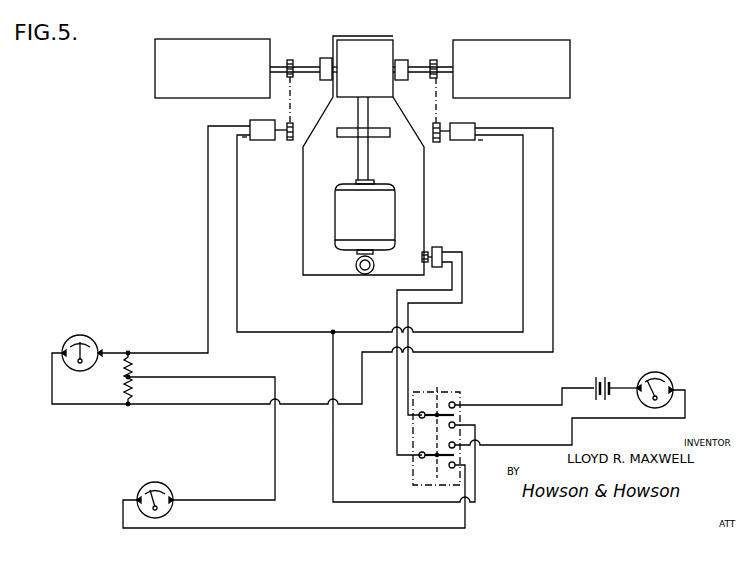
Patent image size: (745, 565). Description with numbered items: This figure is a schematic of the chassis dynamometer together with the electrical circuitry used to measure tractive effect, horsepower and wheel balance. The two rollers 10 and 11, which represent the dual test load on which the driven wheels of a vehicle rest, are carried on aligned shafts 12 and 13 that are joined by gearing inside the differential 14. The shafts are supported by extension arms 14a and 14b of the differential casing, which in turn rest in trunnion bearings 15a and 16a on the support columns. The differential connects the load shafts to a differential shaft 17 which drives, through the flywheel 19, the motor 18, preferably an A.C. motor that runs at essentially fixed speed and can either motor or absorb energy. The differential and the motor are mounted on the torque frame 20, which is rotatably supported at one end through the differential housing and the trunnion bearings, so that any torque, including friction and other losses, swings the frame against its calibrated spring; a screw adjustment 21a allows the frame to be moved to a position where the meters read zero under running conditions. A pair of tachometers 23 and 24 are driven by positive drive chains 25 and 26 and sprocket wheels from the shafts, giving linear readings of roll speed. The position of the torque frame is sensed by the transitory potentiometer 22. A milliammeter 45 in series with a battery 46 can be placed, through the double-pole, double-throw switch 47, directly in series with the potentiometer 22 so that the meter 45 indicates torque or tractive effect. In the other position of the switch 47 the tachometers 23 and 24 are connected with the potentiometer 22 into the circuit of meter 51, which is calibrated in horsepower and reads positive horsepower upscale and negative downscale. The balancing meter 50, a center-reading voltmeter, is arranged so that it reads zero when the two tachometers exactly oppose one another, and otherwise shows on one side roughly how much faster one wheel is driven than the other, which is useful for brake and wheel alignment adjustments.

The roller 10 is at (519, 78).
The roller 11 is at (219, 78).
The shaft 12 is at (417, 64).
The shaft 13 is at (303, 64).
The differential 14 is at (354, 46).
The extension arm of differential housing 14a is at (401, 58).
The extension arm of differential housing 14b is at (331, 56).
The trunnion bearing 15a is at (403, 79).
The trunnion bearing 16a is at (321, 78).
The differential shaft 17 is at (358, 116).
The motor 18 is at (372, 220).
The flywheel 19 is at (348, 138).
The torque frame 20 is at (303, 220).
The screw adjustment 21a is at (363, 275).
The transitory potentiometer 22 is at (437, 249).
The tachometer 23 is at (466, 141).
The tachometer 24 is at (267, 141).
The chain 25 is at (438, 105).
The chain 26 is at (287, 105).
The milliammeter 45 is at (672, 380).
The battery 46 is at (592, 378).
The double-pole, double-throw switch 47 is at (461, 392).
The balancing meter 50 is at (63, 342).
The meter 51 is at (139, 490).